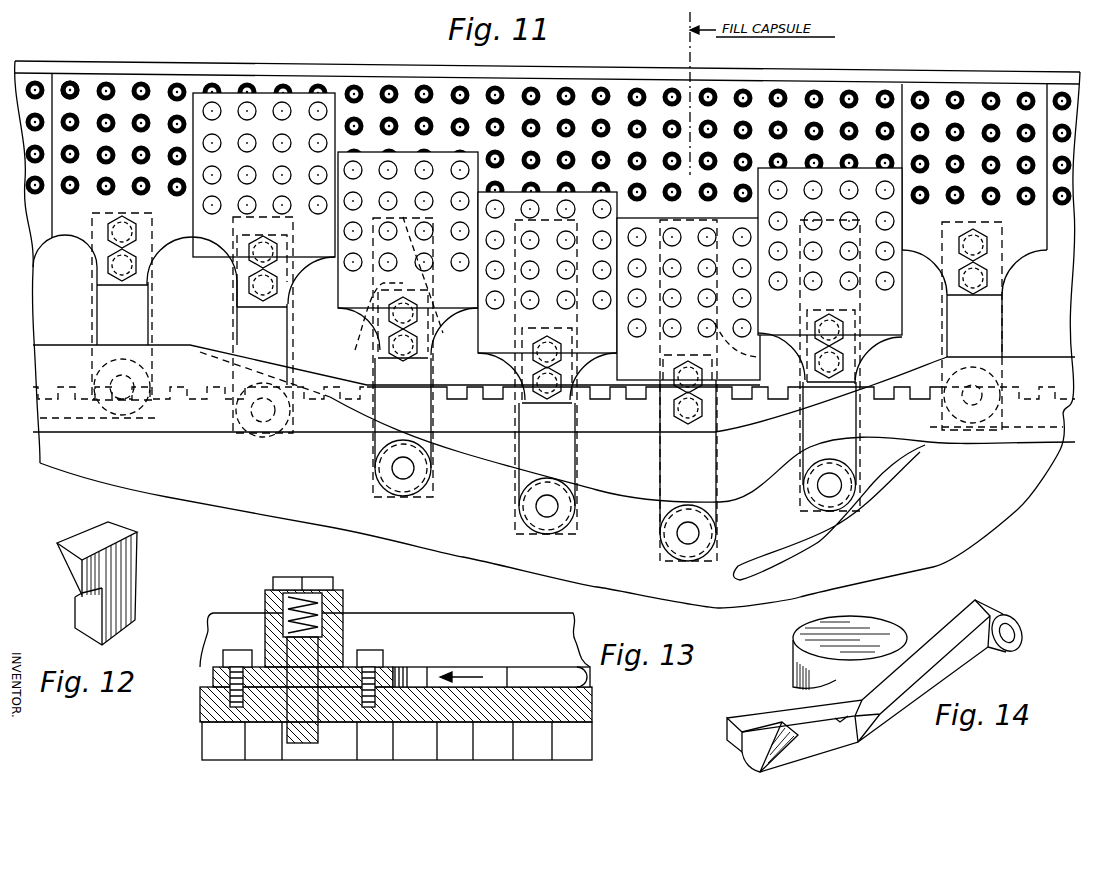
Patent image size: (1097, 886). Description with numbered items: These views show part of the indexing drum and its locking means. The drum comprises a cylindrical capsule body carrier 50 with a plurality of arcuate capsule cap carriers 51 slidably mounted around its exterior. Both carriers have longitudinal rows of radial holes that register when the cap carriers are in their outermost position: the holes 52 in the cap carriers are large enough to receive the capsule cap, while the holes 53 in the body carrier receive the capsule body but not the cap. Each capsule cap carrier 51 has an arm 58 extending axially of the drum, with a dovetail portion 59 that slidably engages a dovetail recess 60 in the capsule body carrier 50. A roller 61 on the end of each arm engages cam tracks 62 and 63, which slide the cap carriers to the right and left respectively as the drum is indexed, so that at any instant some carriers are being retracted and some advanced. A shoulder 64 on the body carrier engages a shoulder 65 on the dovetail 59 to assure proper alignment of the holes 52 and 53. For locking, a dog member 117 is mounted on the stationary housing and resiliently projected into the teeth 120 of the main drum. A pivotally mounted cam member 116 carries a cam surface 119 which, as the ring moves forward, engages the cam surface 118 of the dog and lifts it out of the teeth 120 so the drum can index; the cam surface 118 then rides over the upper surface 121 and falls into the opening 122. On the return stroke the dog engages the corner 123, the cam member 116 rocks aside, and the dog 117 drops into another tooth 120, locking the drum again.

In FIG. 11, the capsule body carrier 50 is at (617, 78).
In FIG. 11, the capsule cap carrier 51 is at (228, 98).
In FIG. 11, the holes in the capsule cap carriers 52 is at (70, 87).
In FIG. 11, the holes in the capsule body carrier 53 is at (386, 92).
In FIG. 11, the arm 58 is at (148, 304).
In FIG. 11, the dovetail portion 59 is at (512, 478).
In FIG. 11, the dovetail recess 60 is at (760, 362).
In FIG. 11, the roller 61 is at (230, 415).
In FIG. 11, the cam track 62 is at (620, 492).
In FIG. 11, the cam track 63 is at (833, 543).
In FIG. 11, the shoulder 64 is at (440, 345).
In FIG. 11, the shoulder 65 is at (373, 327).
In FIG. 13, the cam member 116 is at (473, 667).
In FIG. 14, the cam member 116 is at (895, 698).
In FIG. 12, the dog member 117 is at (127, 565).
In FIG. 13, the dog member 117 is at (298, 750).
In FIG. 12, the cam surface 118 is at (67, 578).
In FIG. 13, the cam surface 118 is at (268, 697).
In FIG. 13, the cam surface 119 is at (367, 710).
In FIG. 14, the cam surface 119 is at (782, 753).
In FIG. 13, the teeth 120 is at (487, 757).
In FIG. 14, the upper surface 121 is at (858, 738).
In FIG. 14, the opening 122 is at (942, 668).
In FIG. 14, the corner 123 is at (862, 708).